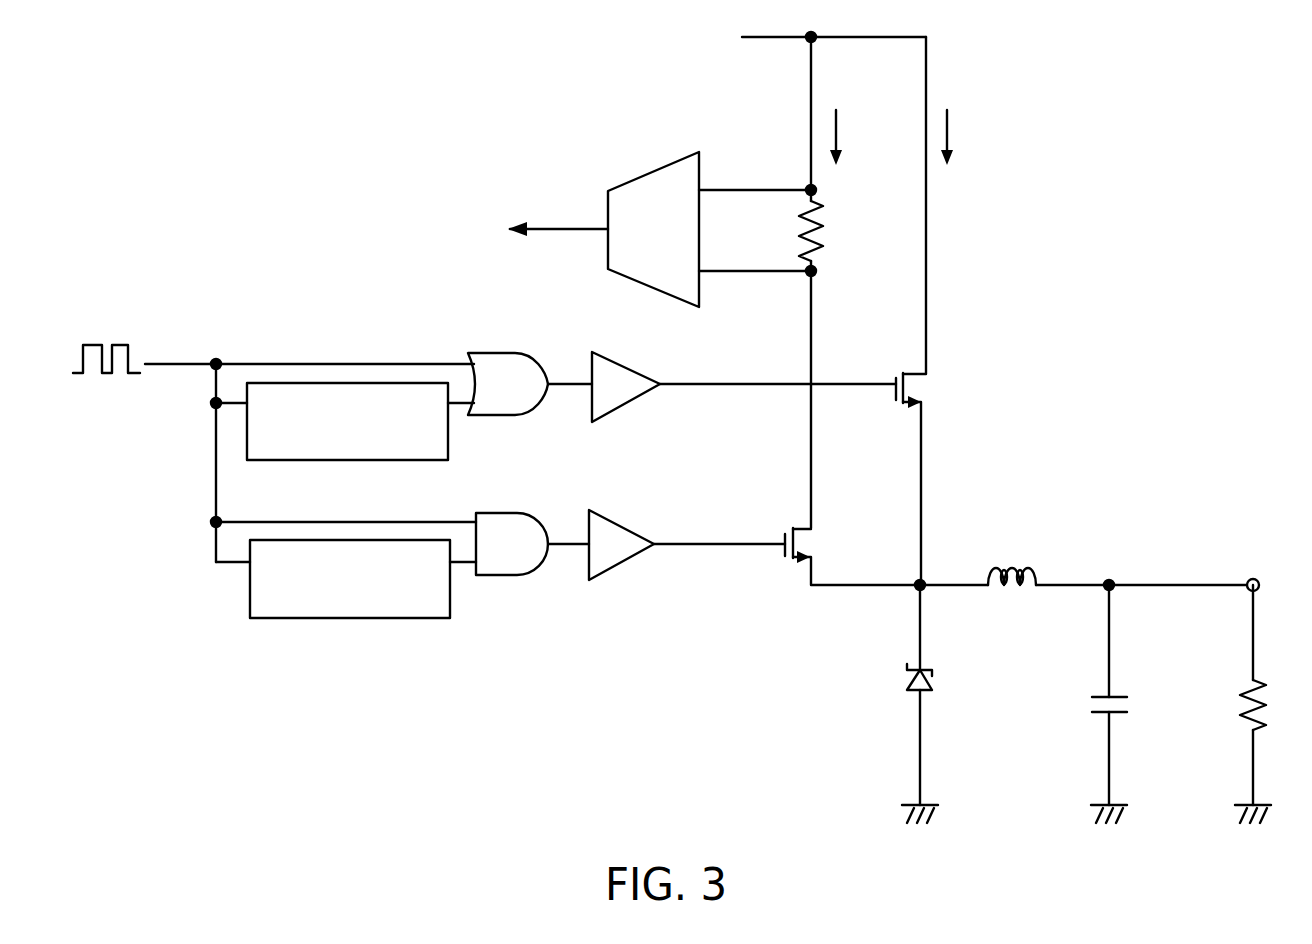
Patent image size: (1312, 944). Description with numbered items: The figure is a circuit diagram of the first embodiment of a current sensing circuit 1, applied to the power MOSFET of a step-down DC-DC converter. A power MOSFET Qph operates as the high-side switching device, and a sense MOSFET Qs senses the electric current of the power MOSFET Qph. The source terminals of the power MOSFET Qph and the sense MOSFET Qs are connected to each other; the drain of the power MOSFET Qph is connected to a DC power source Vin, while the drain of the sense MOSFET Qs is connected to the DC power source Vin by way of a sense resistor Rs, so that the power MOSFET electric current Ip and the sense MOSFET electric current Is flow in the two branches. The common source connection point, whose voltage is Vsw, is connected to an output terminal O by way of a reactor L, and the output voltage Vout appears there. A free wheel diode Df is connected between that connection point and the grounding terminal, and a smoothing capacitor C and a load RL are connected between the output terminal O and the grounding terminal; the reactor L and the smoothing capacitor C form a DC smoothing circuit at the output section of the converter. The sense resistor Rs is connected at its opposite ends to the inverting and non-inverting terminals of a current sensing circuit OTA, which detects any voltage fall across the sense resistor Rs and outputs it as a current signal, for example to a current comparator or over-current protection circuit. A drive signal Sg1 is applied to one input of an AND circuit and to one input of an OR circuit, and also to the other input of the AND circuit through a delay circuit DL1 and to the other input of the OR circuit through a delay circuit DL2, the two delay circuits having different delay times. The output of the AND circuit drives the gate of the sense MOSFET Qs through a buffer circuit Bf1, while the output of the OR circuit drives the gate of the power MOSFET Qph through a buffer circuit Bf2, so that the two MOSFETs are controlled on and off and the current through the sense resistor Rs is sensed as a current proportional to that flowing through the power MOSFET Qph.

The current sensing circuit 1 is at (492, 732).
The drive signal Sg1 is at (263, 433).
The delay circuit DL1 is at (344, 540).
The delay circuit DL2 is at (346, 383).
The OR circuit OR is at (513, 353).
The AND circuit AND is at (511, 513).
The buffer circuit Bf1 is at (630, 524).
The buffer circuit Bf2 is at (626, 365).
The current sensing circuit OTA is at (652, 170).
The DC power source Vin is at (834, 24).
The sense MOSFET electric current Is is at (847, 137).
The power MOSFET electric current Ip is at (959, 137).
The sense resistor Rs is at (828, 226).
The power MOSFET Qph is at (928, 390).
The sense MOSFET Qs is at (808, 546).
The voltage at connection point Vsw is at (916, 590).
The reactor L is at (1015, 568).
The output voltage Vout is at (1175, 575).
The output terminal O is at (1251, 578).
The smoothing capacitor C is at (1092, 706).
The load RL is at (1242, 706).
The free wheel diode Df is at (905, 686).